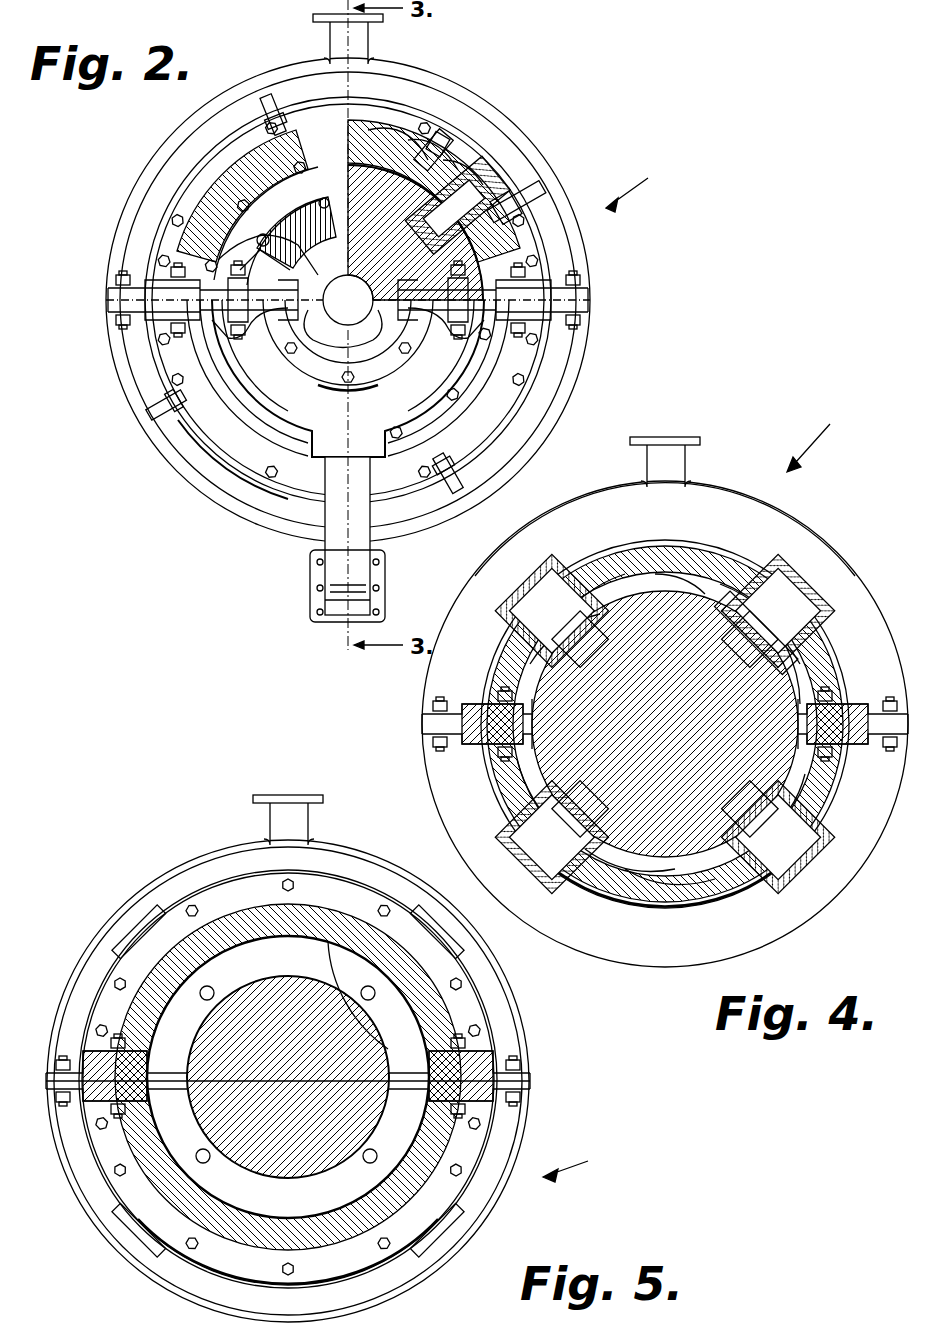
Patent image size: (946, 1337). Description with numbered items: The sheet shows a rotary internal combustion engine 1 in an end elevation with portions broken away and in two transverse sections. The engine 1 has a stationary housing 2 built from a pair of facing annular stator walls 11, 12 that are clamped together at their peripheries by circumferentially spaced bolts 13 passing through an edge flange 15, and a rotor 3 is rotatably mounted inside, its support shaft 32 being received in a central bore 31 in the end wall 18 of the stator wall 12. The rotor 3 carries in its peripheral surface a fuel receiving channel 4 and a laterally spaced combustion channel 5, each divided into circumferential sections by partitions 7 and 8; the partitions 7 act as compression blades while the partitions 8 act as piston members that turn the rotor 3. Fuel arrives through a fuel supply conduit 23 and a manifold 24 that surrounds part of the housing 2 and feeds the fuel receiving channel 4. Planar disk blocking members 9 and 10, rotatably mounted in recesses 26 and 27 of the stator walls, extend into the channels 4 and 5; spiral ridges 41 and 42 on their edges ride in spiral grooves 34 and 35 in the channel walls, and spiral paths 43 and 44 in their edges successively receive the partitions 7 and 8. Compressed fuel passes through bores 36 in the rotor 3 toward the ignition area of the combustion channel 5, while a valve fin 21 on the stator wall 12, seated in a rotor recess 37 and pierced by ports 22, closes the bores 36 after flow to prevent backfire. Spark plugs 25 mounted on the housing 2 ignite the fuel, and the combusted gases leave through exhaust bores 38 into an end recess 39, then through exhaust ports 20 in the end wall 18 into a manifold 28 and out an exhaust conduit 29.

In FIG. 2, the rotary internal combustion engine 1 is at (636, 189).
In FIG. 4, the rotary internal combustion engine 1 is at (813, 444).
In FIG. 5, the rotary internal combustion engine 1 is at (572, 1165).
In FIG. 2, the housing 2 is at (376, 300).
In FIG. 4, the housing 2 is at (665, 745).
In FIG. 5, the housing 2 is at (288, 1085).
In FIG. 2, the rotor 3 is at (250, 207).
In FIG. 4, the rotor 3 is at (645, 724).
In FIG. 5, the rotor 3 is at (288, 1077).
In FIG. 4, the fuel receiving channel 4 is at (558, 605).
In FIG. 2, the combustion channel 5 is at (434, 187).
In FIG. 4, the partitions 7 is at (665, 680).
In FIG. 2, the partitions 8 is at (415, 201).
In FIG. 4, the blocking members 9 is at (779, 829).
In FIG. 2, the blocking members 10 is at (448, 123).
In FIG. 4, the stator wall 11 is at (665, 906).
In FIG. 5, the stator wall 11 is at (288, 1259).
In FIG. 2, the stator wall 12 is at (287, 107).
In FIG. 2, the bolts 13 is at (348, 341).
In FIG. 2, the peripheral edge flange 15 is at (233, 482).
In FIG. 5, the peripheral edge flange 15 is at (309, 1081).
In FIG. 2, the end wall 18 is at (257, 270).
In FIG. 2, the exhaust ports 20 is at (268, 245).
In FIG. 5, the valve fin 21 is at (414, 999).
In FIG. 5, the ports 22 is at (220, 1062).
In FIG. 2, the fuel supply conduit 23 is at (325, 39).
In FIG. 4, the fuel supply conduit 23 is at (687, 462).
In FIG. 5, the fuel supply conduit 23 is at (265, 820).
In FIG. 2, the manifold 24 is at (341, 300).
In FIG. 4, the manifold 24 is at (665, 724).
In FIG. 5, the manifold 24 is at (288, 1081).
In FIG. 2, the spark plugs 25 is at (134, 404).
In FIG. 4, the recesses 26 is at (558, 843).
In FIG. 2, the recesses 27 is at (518, 201).
In FIG. 2, the manifold 28 is at (448, 480).
In FIG. 2, the exhaust conduit 29 is at (327, 539).
In FIG. 2, the bore 31 is at (339, 345).
In FIG. 2, the support shaft 32 is at (297, 328).
In FIG. 4, the grooves 34 is at (627, 729).
In FIG. 2, the grooves 35 is at (348, 308).
In FIG. 5, the bores 36 is at (384, 1074).
In FIG. 5, the recess 37 is at (288, 1092).
In FIG. 2, the exhaust bores 38 is at (346, 261).
In FIG. 2, the recess 39 is at (296, 232).
In FIG. 4, the ridges 41 is at (770, 605).
In FIG. 2, the ridges 42 is at (485, 144).
In FIG. 4, the paths 43 is at (799, 613).
In FIG. 2, the paths 44 is at (490, 199).